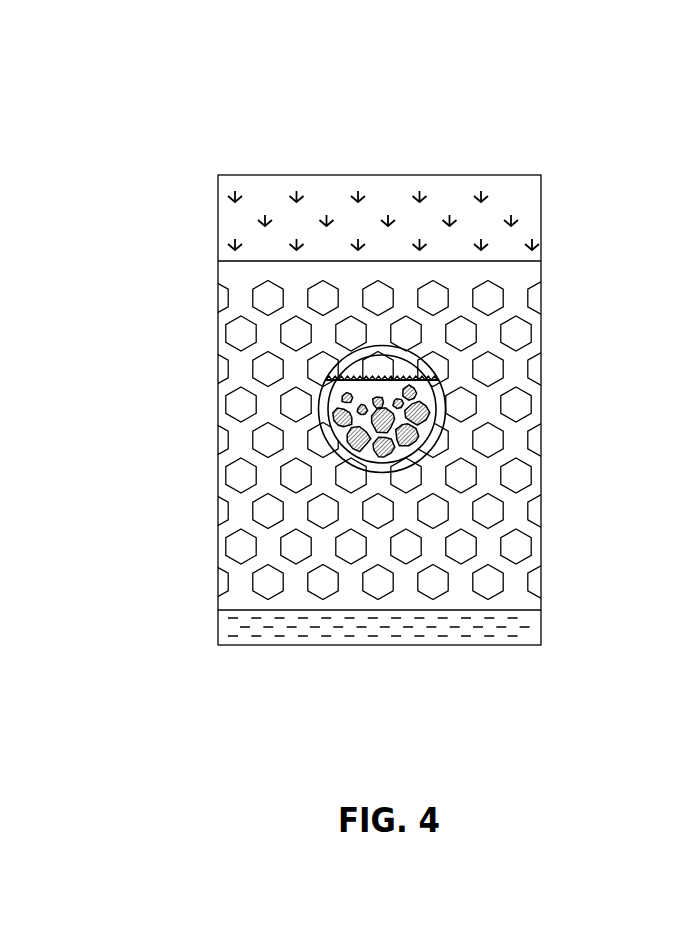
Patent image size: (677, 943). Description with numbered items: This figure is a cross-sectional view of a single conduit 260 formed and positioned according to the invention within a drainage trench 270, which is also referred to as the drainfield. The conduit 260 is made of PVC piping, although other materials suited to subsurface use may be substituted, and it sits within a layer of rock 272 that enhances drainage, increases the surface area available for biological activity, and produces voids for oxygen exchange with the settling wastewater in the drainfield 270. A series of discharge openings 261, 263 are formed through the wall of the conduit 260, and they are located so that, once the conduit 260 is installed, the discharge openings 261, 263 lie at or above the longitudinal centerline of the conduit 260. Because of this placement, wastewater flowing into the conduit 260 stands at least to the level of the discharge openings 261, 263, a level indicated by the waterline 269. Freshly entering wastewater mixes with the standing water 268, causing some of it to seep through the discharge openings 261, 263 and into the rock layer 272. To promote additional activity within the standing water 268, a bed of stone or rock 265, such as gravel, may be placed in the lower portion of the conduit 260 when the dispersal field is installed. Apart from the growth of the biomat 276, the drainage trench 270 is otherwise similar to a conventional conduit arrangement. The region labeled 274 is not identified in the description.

The conduit 260 is at (443, 418).
The discharge opening 261 is at (330, 376).
The discharge opening 263 is at (400, 378).
The bed of stone or rock 265 is at (340, 445).
The standing water 268 is at (330, 406).
The waterline 269 is at (383, 378).
The drainage trench 270 is at (165, 148).
The layer of rock 272 is at (543, 492).
The top cover layer 274 is at (527, 202).
The biomat 276 is at (542, 618).